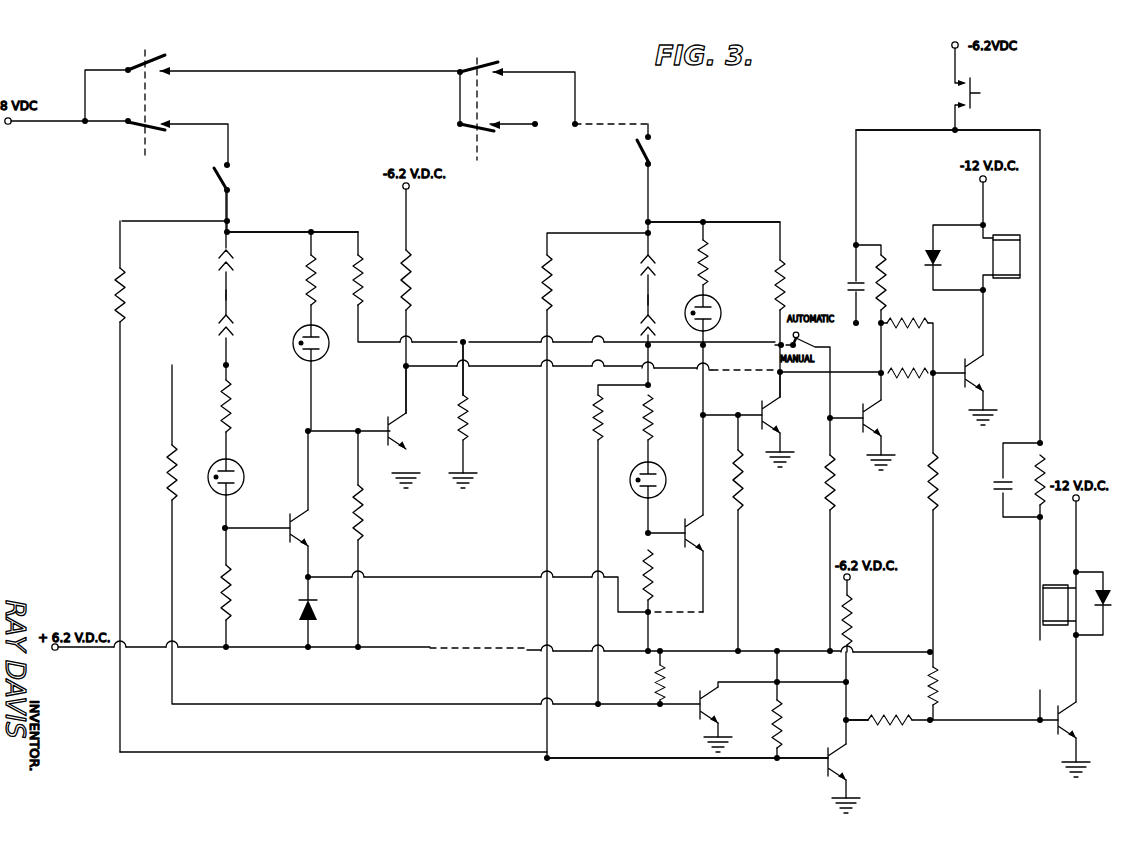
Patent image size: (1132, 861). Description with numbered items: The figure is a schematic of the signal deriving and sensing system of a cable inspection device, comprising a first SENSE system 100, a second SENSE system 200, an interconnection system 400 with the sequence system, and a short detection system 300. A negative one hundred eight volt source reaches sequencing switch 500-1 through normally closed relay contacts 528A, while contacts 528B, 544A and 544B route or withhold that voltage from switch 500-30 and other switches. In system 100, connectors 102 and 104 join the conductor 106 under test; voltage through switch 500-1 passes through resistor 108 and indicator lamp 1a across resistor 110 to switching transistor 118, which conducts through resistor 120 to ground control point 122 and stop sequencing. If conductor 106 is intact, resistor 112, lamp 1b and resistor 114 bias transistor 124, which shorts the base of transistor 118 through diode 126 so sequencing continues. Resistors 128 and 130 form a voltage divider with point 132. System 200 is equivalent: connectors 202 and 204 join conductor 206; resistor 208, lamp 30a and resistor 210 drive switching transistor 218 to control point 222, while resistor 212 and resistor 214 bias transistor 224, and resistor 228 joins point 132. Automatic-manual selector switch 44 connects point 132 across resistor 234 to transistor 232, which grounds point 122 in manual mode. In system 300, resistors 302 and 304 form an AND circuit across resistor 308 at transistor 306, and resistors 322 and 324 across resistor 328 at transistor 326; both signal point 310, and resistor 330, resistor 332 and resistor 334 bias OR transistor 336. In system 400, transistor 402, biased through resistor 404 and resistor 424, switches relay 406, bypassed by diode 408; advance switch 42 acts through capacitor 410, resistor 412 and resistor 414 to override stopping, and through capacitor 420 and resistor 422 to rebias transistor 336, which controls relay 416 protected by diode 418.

The contact of relay 528 528B is at (140, 66).
The contact of relay 528 528A is at (136, 140).
The sequencing switch 500-1 is at (229, 182).
The first SENSE system 100 is at (300, 220).
The contacts of relay 544 544B is at (476, 68).
The contacts of relay 544 544A is at (470, 140).
The sequencing switch 500-30 is at (648, 152).
The second SENSE system 200 is at (735, 218).
The advance switch 42 is at (983, 86).
The conductor connector 102 is at (232, 258).
The conductor to be tested 106 is at (230, 296).
The conductor connector 104 is at (232, 326).
The resistor 302 is at (126, 299).
The resistor 108 is at (316, 285).
The resistor 128 is at (376, 280).
The resistor 120 is at (412, 283).
The point 132 is at (465, 340).
The control point 122 is at (404, 368).
The switching transistor 118 is at (394, 436).
The resistor 130 is at (470, 428).
The resistor 112 is at (231, 412).
The indicator lamp 1a is at (328, 358).
The indicator lamp 1b is at (244, 480).
The resistor 322 is at (170, 491).
The transistor 124 is at (300, 533).
The resistor 110 is at (382, 512).
The resistor 114 is at (231, 596).
The diode 126 is at (317, 611).
The resistor 304 is at (552, 291).
The connector 202 is at (642, 260).
The conductor 206 is at (648, 299).
The connector 204 is at (642, 328).
The resistor 324 is at (597, 428).
The resistor 212 is at (653, 414).
The resistor 208 is at (708, 259).
The indicator lamp 30a is at (722, 318).
The resistor 228 is at (785, 291).
The capacitor 410 is at (850, 283).
The resistor 412 is at (886, 297).
The resistor 414 is at (910, 320).
The automatic-manual selector switch 44 is at (805, 342).
The resistor 404 is at (914, 368).
The transistor 402 is at (974, 378).
The diode 408 is at (942, 260).
The relay 406 is at (1003, 280).
The interconnection system 400 is at (1015, 332).
The point 222 is at (782, 378).
The switching transistor 218 is at (770, 420).
The transistor 232 is at (872, 422).
The transistor 306 is at (666, 478).
The transistor 224 is at (688, 533).
The resistor 210 is at (744, 494).
The resistor 214 is at (653, 584).
The resistor 234 is at (835, 494).
The resistor 330 is at (852, 619).
The capacitor 420 is at (1000, 480).
The resistor 424 is at (938, 490).
The resistor 422 is at (1044, 470).
The relay 416 is at (1052, 584).
The diode 418 is at (1106, 590).
The resistor 328 is at (665, 680).
The transistor 326 is at (708, 710).
The resistor 308 is at (782, 731).
The point 310 is at (856, 718).
The resistor 332 is at (888, 725).
The resistor 334 is at (938, 692).
The transistor 336 is at (1067, 722).
The short detection system 300 is at (720, 772).